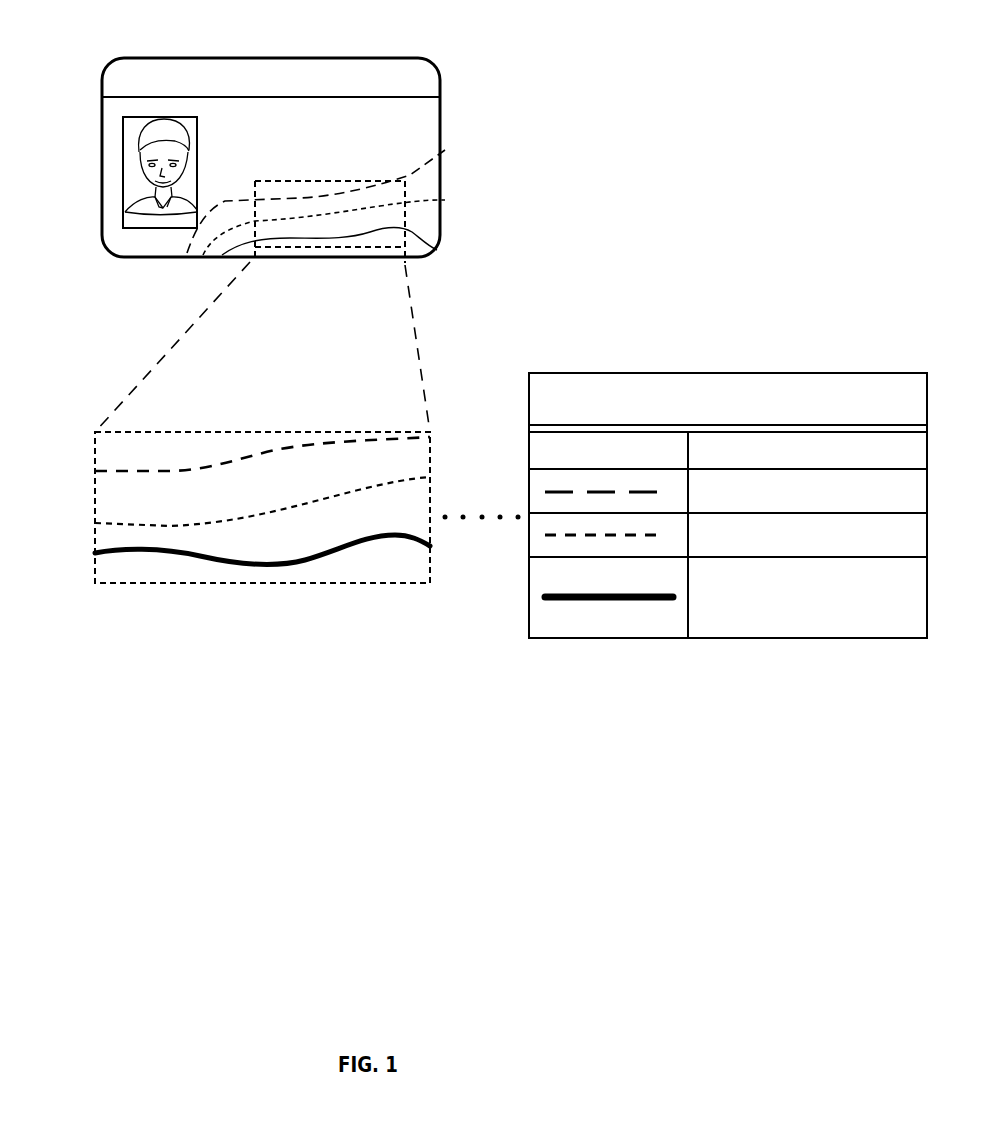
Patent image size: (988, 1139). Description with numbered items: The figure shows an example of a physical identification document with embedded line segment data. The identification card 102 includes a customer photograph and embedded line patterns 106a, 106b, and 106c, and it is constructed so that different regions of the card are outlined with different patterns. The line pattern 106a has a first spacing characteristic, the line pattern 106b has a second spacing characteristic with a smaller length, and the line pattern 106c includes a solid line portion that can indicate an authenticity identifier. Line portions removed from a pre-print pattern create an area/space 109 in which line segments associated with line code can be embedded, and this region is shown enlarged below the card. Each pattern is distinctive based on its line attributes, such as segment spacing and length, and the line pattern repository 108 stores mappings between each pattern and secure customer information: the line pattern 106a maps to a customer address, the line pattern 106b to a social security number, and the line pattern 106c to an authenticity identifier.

The identification card 102 is at (110, 62).
The line pattern 106a is at (240, 456).
The line pattern 106b is at (163, 527).
The line pattern 106c is at (147, 553).
The line pattern repository 108 is at (528, 392).
The area/space 109 is at (118, 460).